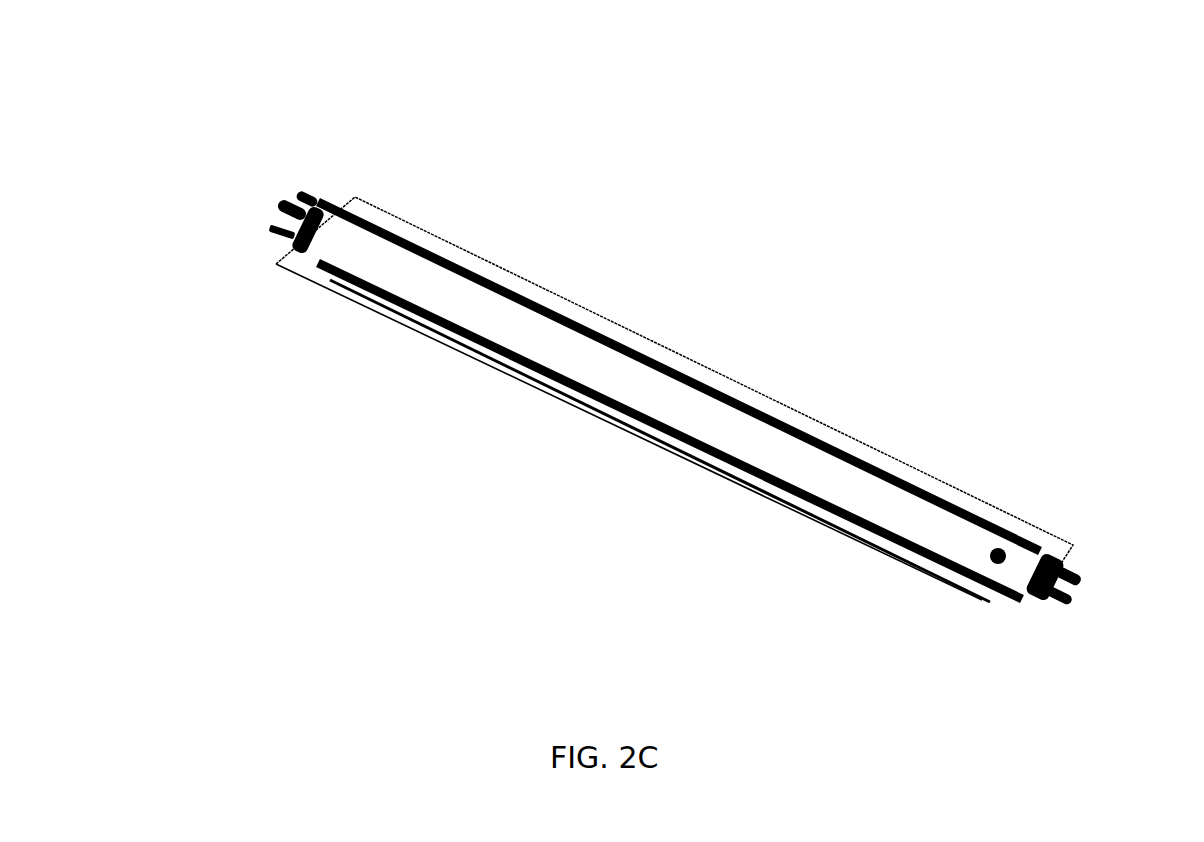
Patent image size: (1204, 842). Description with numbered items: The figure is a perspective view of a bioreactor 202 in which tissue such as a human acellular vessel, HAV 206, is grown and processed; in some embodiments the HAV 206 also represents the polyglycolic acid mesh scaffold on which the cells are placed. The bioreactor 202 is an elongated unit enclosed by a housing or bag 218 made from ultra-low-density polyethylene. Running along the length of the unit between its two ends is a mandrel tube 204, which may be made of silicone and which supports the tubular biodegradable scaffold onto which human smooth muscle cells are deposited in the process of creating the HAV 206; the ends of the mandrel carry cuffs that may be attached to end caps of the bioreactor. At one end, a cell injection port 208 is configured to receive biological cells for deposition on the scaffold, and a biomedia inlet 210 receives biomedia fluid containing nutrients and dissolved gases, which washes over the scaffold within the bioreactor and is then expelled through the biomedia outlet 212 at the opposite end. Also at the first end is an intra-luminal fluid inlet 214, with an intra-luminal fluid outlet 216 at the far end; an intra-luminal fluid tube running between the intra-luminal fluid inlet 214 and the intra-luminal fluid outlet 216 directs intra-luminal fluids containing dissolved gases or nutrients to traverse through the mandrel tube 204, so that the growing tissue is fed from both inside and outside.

The bioreactor 202 is at (642, 347).
The mandrel tube 204 is at (515, 322).
The HAV 206 is at (837, 473).
The cell injection port 208 is at (265, 232).
The biomedia inlet 210 is at (293, 193).
The biomedia outlet 212 is at (1078, 587).
The intra-luminal fluid inlet 214 is at (280, 208).
The intra-luminal fluid outlet 216 is at (1063, 605).
The housing or bag 218 is at (695, 377).